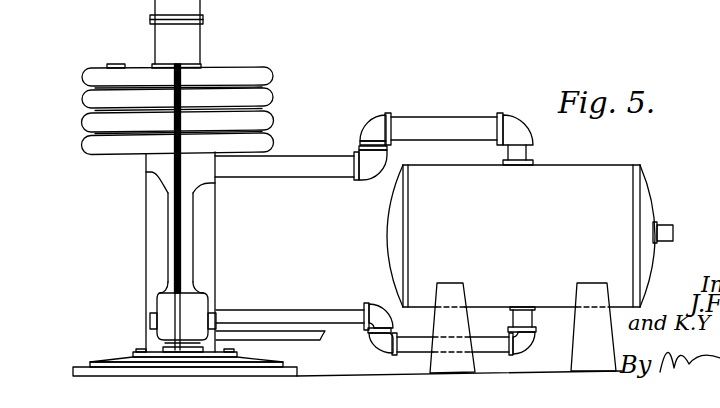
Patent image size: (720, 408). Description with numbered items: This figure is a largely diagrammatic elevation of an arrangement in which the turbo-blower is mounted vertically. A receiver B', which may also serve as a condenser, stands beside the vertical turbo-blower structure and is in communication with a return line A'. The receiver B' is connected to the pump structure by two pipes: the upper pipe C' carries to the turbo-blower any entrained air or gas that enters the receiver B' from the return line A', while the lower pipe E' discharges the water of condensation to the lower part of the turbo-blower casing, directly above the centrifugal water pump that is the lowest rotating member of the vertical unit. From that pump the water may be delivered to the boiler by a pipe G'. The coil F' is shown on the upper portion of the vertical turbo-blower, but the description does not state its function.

The return line A' is at (676, 232).
The receiver B' is at (521, 269).
The pipe C' is at (374, 136).
The pipe E' is at (304, 306).
The coil F' is at (194, 109).
The pipe G' is at (376, 338).